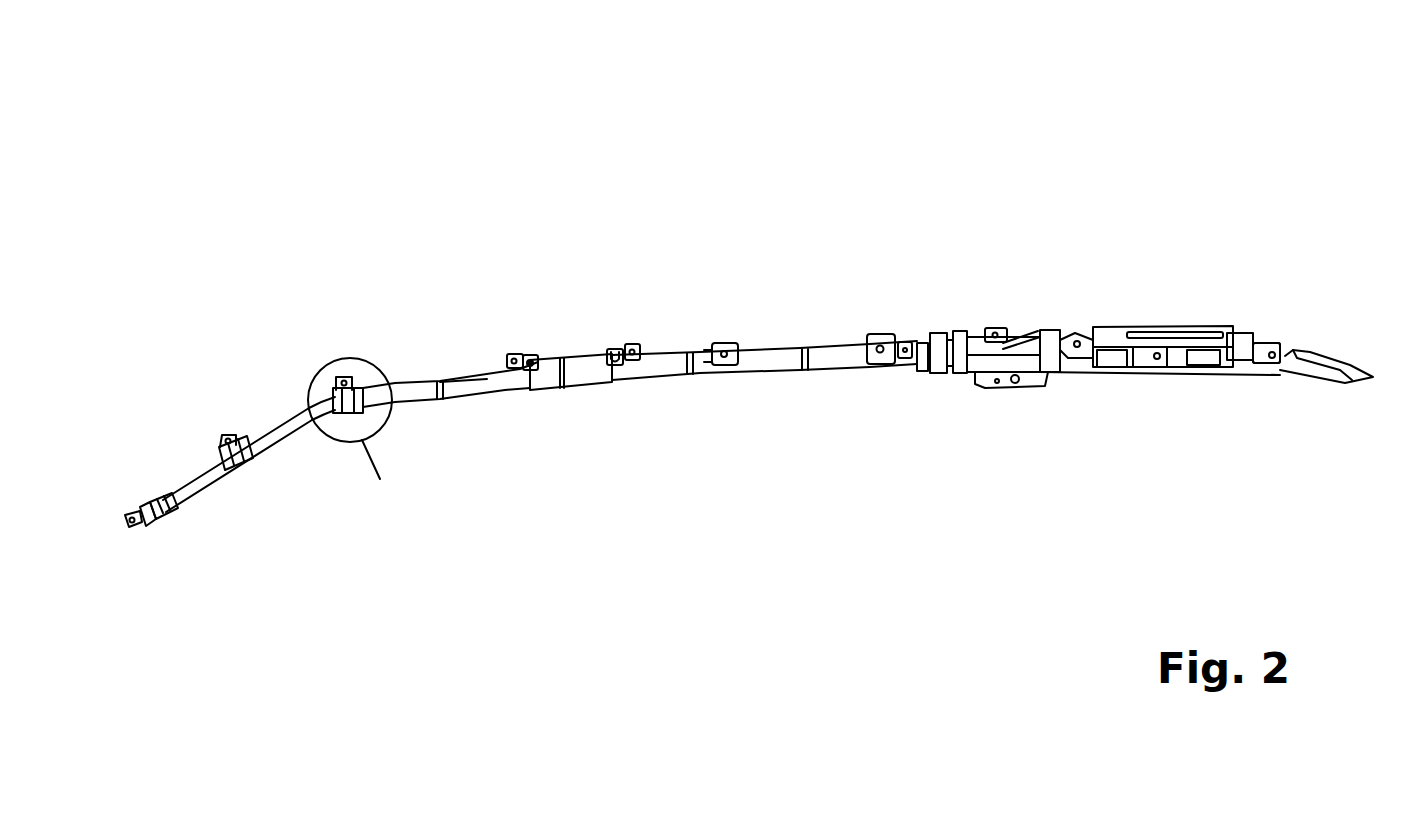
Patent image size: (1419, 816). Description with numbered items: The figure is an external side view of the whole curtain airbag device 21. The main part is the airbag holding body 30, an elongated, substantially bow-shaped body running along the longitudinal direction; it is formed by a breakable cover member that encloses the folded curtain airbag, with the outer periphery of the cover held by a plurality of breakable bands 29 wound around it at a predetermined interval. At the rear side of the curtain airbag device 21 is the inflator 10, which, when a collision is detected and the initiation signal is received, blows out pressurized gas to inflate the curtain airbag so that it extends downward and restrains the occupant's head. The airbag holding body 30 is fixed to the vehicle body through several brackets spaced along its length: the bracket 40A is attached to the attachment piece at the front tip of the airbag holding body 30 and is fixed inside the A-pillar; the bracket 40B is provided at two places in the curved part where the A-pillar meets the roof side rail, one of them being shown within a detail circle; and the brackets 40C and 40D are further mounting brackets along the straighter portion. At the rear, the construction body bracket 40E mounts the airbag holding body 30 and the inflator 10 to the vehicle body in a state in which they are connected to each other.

The curtain airbag device 21 is at (388, 205).
The breakable band 29 is at (228, 473).
The airbag holding body 30 is at (487, 380).
The inflator 10 is at (1260, 350).
The bracket 40A is at (127, 517).
The bracket 40B is at (223, 437).
The bracket 40C is at (647, 338).
The bracket 40D is at (716, 340).
The construction body bracket 40E is at (1358, 325).